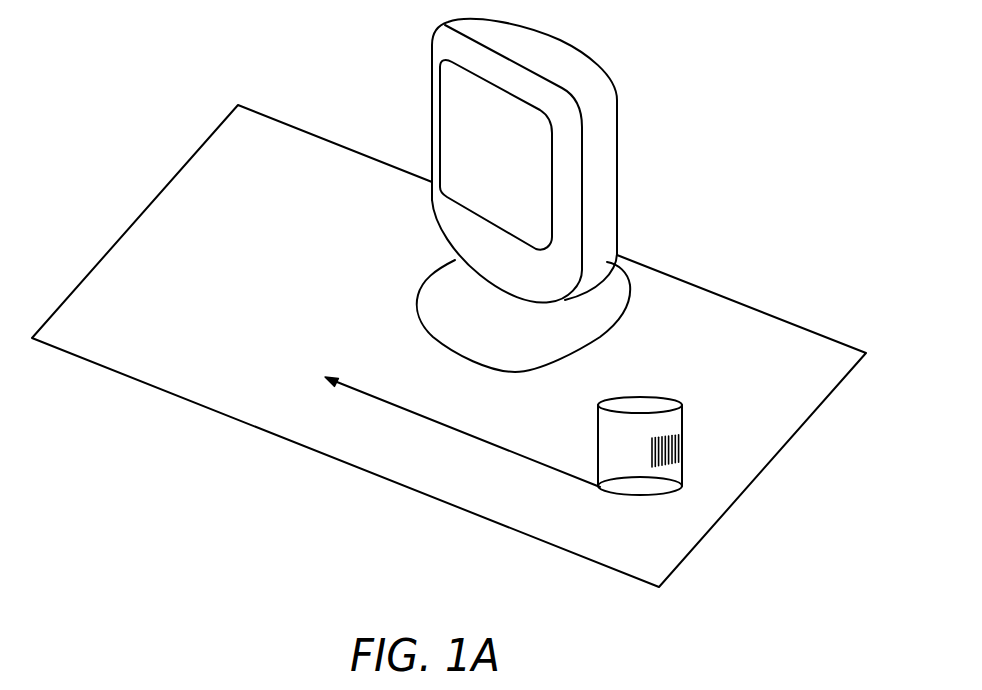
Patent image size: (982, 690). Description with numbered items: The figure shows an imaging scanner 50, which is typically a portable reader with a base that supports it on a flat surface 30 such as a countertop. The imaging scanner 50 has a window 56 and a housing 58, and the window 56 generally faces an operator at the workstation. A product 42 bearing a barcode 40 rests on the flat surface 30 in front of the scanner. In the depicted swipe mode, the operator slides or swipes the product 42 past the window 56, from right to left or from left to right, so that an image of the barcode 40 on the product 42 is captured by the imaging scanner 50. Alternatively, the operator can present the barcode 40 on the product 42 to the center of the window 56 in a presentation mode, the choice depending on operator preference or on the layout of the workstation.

The flat surface 30 is at (95, 282).
The barcode 40 is at (682, 440).
The product 42 is at (641, 404).
The imaging scanner 50 is at (633, 47).
The window 56 is at (457, 120).
The housing 58 is at (617, 163).